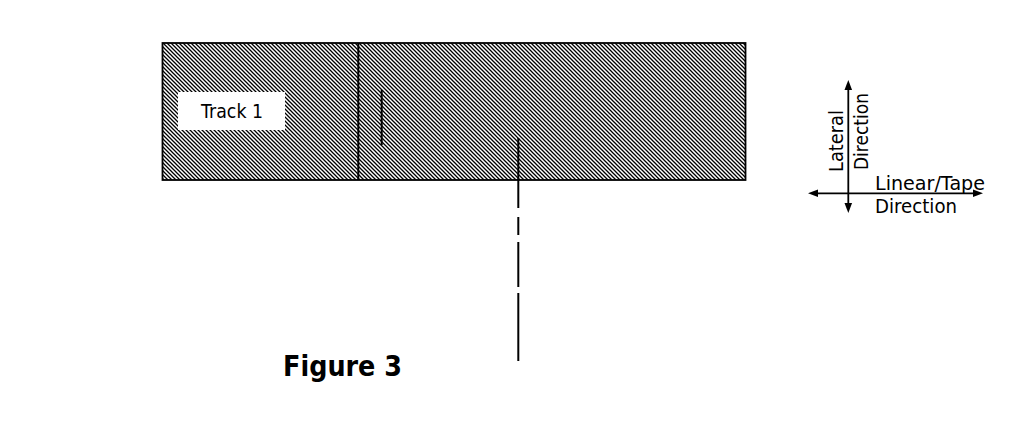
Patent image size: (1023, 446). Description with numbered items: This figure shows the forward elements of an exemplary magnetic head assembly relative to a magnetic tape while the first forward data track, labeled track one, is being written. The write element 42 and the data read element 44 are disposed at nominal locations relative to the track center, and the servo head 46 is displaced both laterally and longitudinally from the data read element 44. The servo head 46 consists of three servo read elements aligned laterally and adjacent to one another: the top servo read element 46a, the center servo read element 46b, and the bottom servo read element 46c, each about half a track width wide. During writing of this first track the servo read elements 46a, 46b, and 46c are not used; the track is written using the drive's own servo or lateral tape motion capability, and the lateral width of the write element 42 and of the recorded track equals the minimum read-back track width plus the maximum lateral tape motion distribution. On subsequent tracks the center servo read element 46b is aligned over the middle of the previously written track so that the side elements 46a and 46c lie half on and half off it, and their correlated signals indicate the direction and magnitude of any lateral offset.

The write element 42 is at (358, 123).
The data read element 44 is at (397, 140).
The servo head 46 is at (522, 249).
The top servo read element 46a is at (518, 187).
The center servo read element 46b is at (518, 257).
The bottom servo read element 46c is at (518, 346).